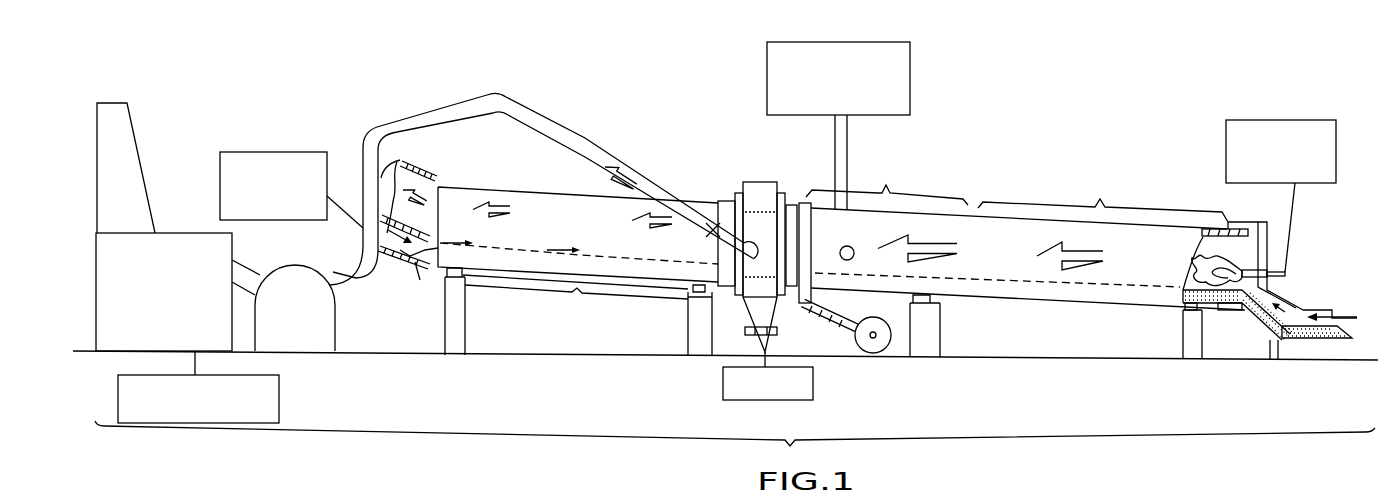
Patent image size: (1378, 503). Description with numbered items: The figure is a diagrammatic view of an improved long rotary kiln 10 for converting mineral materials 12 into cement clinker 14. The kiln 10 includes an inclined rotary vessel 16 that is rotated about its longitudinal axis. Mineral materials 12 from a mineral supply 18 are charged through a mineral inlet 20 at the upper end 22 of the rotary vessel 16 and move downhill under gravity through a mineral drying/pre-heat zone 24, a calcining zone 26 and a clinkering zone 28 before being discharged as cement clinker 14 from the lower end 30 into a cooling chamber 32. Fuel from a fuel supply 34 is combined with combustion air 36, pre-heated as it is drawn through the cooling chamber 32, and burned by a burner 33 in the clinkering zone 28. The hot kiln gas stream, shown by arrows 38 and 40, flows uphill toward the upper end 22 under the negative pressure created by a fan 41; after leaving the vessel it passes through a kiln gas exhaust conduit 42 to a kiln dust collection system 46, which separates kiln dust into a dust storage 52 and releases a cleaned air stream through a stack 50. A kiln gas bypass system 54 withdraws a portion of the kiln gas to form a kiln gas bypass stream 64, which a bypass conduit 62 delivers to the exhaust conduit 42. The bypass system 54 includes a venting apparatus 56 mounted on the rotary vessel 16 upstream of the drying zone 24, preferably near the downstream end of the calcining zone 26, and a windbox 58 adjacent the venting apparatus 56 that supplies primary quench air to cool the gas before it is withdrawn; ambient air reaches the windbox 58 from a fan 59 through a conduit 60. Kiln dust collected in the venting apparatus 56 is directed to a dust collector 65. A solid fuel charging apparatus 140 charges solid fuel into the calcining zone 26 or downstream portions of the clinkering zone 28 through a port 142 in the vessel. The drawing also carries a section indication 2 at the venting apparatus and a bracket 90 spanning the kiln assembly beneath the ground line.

The long rotary kiln 10 is at (1062, 97).
The mineral materials 12 is at (422, 257).
The cement clinker 14 is at (1308, 338).
The rotary vessel 16 is at (510, 188).
The mineral supply 18 is at (272, 152).
The mineral inlet 20 is at (393, 232).
The upper end 22 is at (447, 172).
The mineral drying/pre-heat zone 24 is at (575, 300).
The calcining zone 26 is at (887, 177).
The clinkering zone 28 is at (1103, 194).
The lower end 30 is at (1170, 313).
The cooling chamber 32 is at (1310, 294).
The burner 33 is at (1287, 272).
The fuel supply 34 is at (1295, 120).
The combustion air 36 is at (1278, 362).
The hot kiln gas stream arrows 38 is at (935, 244).
The kiln gas stream arrows 40 is at (500, 212).
The fan 41 is at (336, 323).
The kiln gas exhaust conduit 42 is at (395, 165).
The kiln dust collection system 46 is at (178, 233).
The stack 50 is at (130, 155).
The dust storage 52 is at (280, 403).
The kiln gas bypass system 54 is at (728, 322).
The venting apparatus 56 is at (753, 176).
The windbox 58 is at (812, 231).
The fan 59 is at (873, 353).
The conduit 60 is at (838, 330).
The bypass conduit 62 is at (583, 135).
The kiln gas bypass stream 64 is at (625, 166).
The dust collector 65 is at (785, 385).
The kiln assembly bracket 90 is at (735, 462).
The solid fuel charging apparatus 140 is at (910, 82).
The port 142 is at (862, 256).
The section line 2- 2 is at (780, 162).